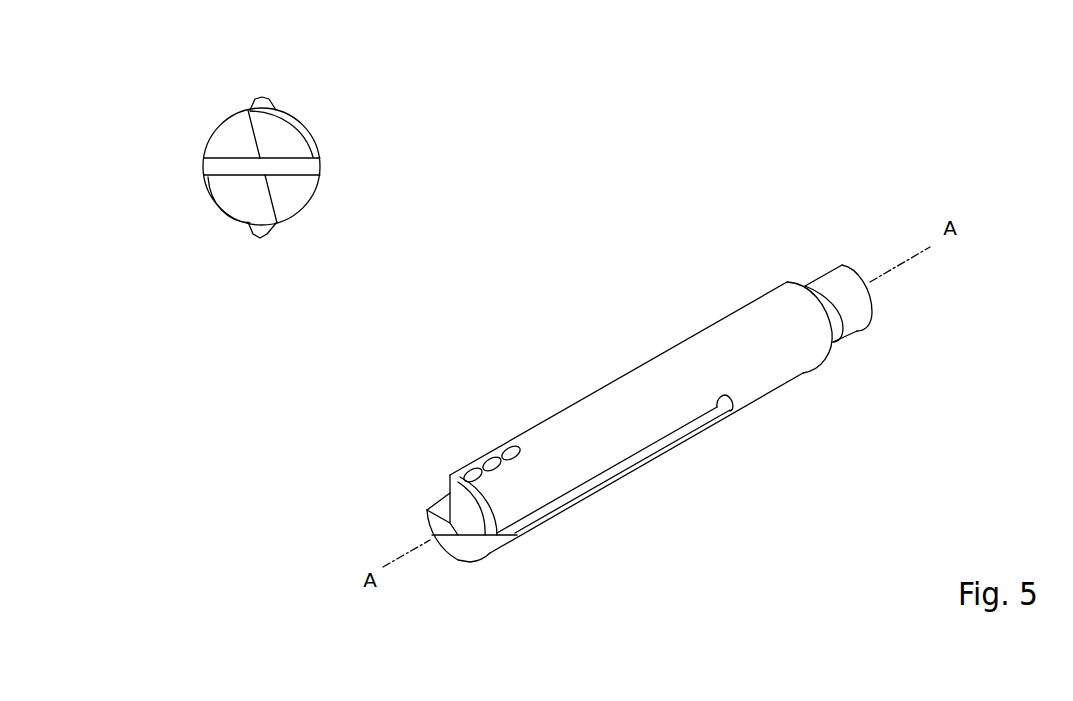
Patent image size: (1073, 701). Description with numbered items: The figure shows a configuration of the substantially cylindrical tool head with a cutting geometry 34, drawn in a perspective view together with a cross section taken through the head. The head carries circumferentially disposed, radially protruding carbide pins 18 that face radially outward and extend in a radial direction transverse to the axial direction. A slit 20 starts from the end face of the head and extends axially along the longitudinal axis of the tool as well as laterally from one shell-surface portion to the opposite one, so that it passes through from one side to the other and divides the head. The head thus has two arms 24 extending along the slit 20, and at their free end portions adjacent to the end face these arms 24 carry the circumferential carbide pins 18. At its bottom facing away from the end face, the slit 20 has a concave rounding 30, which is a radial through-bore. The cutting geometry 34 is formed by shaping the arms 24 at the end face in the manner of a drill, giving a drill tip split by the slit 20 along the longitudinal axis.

The carbide pins 18 is at (267, 233).
The slit 20 is at (300, 167).
The arms 24 is at (305, 125).
The concave rounding 30 is at (730, 414).
The cutting geometry 34 is at (237, 128).